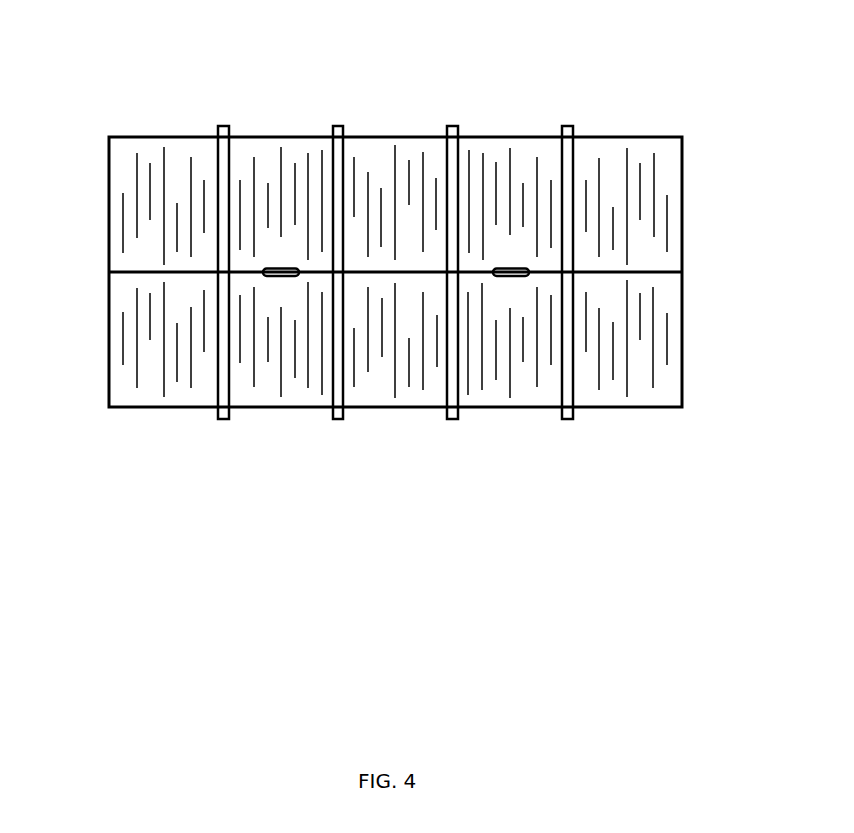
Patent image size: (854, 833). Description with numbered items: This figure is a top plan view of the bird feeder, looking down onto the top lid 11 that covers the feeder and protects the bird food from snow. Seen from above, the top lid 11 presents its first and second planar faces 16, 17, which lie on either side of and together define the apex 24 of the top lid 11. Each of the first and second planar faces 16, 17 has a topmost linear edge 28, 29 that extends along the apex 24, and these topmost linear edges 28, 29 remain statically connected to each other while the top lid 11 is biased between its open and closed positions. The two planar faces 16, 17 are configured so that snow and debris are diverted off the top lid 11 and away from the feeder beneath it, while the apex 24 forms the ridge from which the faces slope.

The top lid 11 is at (712, 241).
The first planar face 16 is at (528, 395).
The second planar face 17 is at (520, 148).
The apex 24 is at (404, 270).
The topmost linear edge 28 is at (132, 276).
The topmost linear edge 29 is at (240, 270).